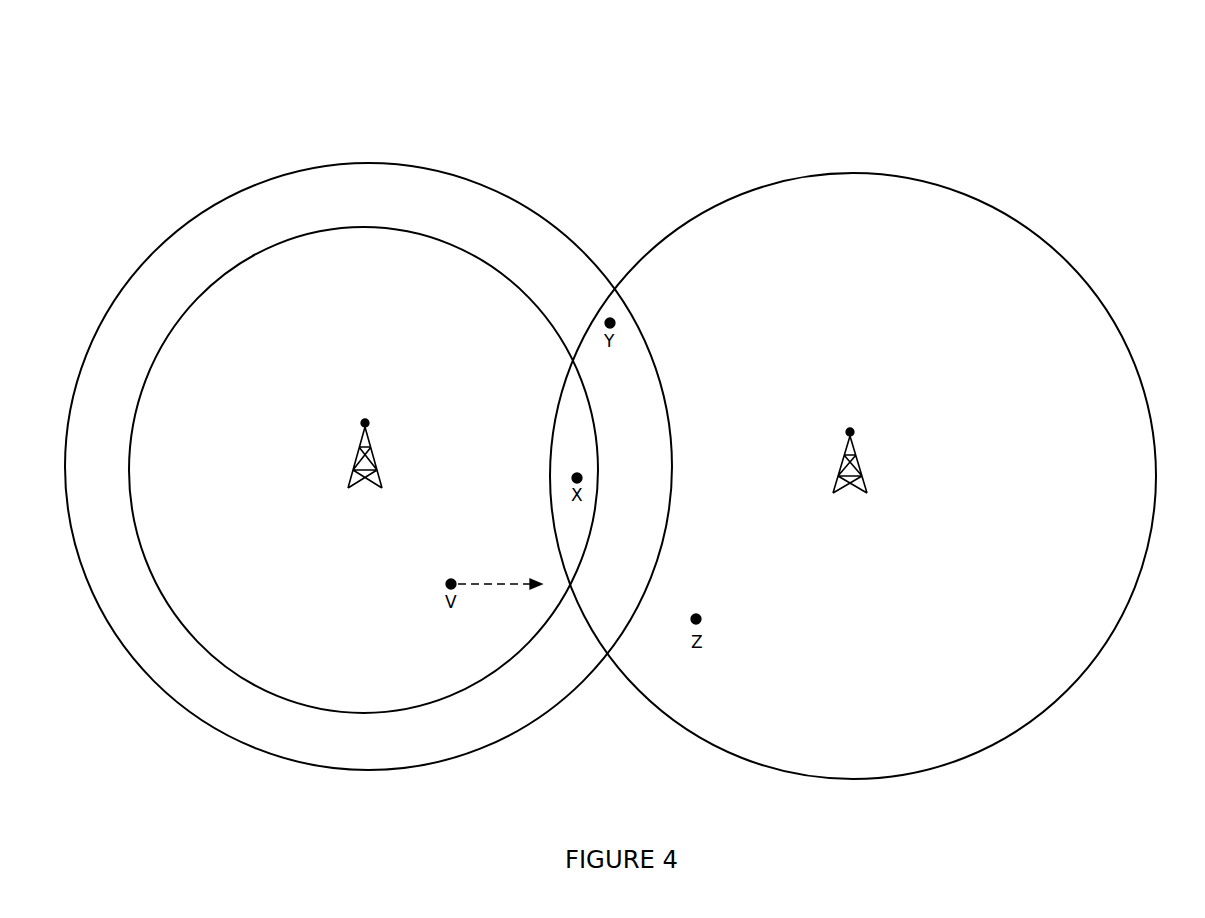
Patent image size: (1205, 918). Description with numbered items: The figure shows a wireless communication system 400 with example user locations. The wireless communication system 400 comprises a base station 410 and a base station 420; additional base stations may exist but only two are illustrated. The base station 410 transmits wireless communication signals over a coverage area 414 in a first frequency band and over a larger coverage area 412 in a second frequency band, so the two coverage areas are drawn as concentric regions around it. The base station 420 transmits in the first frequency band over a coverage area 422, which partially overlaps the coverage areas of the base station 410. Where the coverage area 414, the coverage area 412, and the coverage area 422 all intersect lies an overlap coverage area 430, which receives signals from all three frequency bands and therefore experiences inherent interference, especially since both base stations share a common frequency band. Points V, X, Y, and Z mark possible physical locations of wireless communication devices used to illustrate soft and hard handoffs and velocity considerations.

The wireless communication system 400 is at (1126, 54).
The base station 410 is at (359, 479).
The coverage area 412 is at (502, 180).
The coverage area 414 is at (438, 227).
The base station 420 is at (852, 487).
The coverage area 422 is at (1005, 197).
The overlap coverage area 430 is at (582, 418).